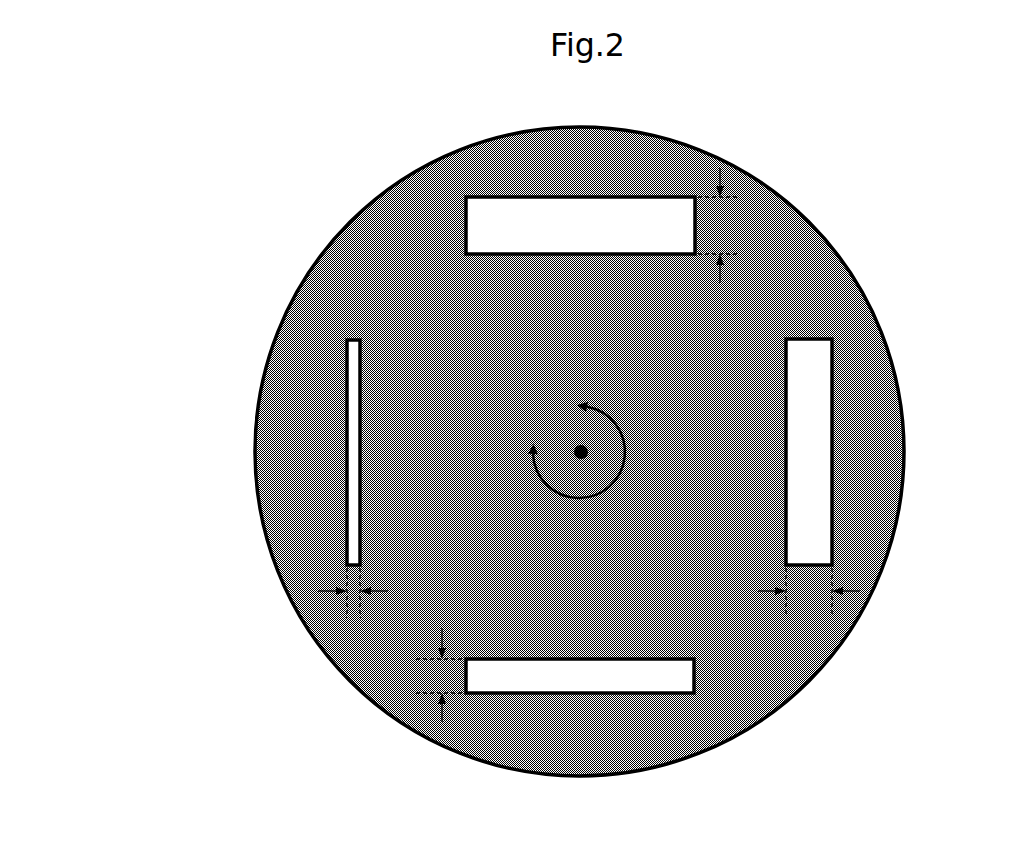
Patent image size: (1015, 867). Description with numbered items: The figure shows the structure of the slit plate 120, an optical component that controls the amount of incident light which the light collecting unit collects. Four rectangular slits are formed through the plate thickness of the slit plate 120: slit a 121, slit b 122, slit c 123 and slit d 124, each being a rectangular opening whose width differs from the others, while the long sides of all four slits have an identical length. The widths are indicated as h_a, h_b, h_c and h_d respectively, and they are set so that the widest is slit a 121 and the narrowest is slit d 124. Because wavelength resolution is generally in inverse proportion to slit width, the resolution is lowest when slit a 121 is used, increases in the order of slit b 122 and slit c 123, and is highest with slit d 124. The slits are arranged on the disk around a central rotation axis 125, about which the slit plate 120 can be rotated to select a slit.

The slit plate 120 is at (330, 763).
The slit a 121 is at (457, 213).
The slit b 122 is at (803, 328).
The slit c 123 is at (575, 685).
The slit d 124 is at (343, 338).
The rotation axis 125 is at (566, 438).